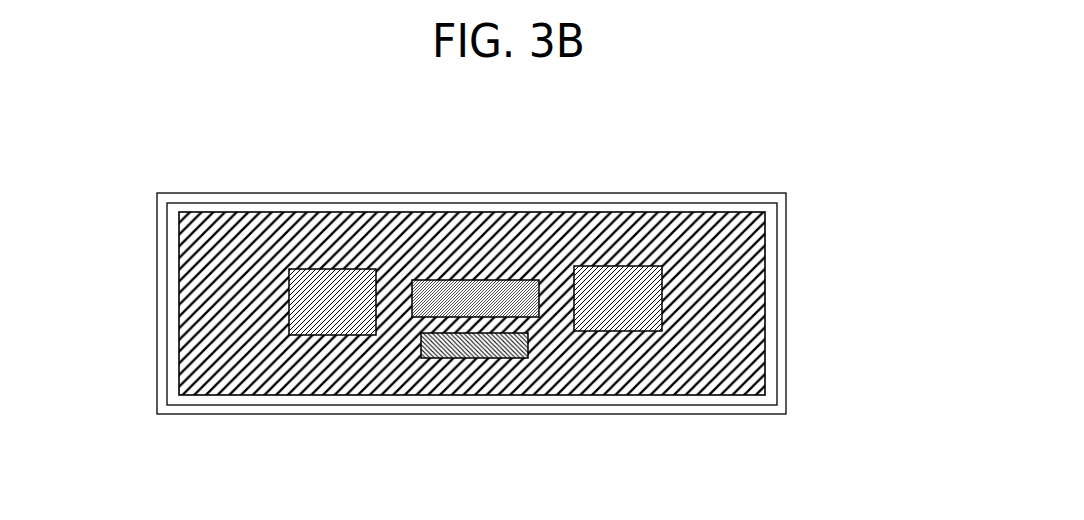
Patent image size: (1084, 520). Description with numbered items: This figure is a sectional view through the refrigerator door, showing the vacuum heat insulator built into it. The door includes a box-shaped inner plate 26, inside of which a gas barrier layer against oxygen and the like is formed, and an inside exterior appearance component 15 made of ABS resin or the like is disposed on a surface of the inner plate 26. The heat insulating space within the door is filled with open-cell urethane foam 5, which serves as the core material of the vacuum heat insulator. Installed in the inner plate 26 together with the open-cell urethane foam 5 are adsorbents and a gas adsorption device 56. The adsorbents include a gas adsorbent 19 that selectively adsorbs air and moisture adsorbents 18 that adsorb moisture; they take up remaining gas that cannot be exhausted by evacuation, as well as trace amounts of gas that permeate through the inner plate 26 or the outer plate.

The open-cell urethane foam 5 is at (535, 243).
The inside exterior appearance component 15 is at (775, 325).
The moisture adsorbent 18 is at (320, 268).
The gas adsorbent 19 is at (470, 280).
The inner plate 26 is at (768, 261).
The gas adsorption device 56 is at (455, 358).